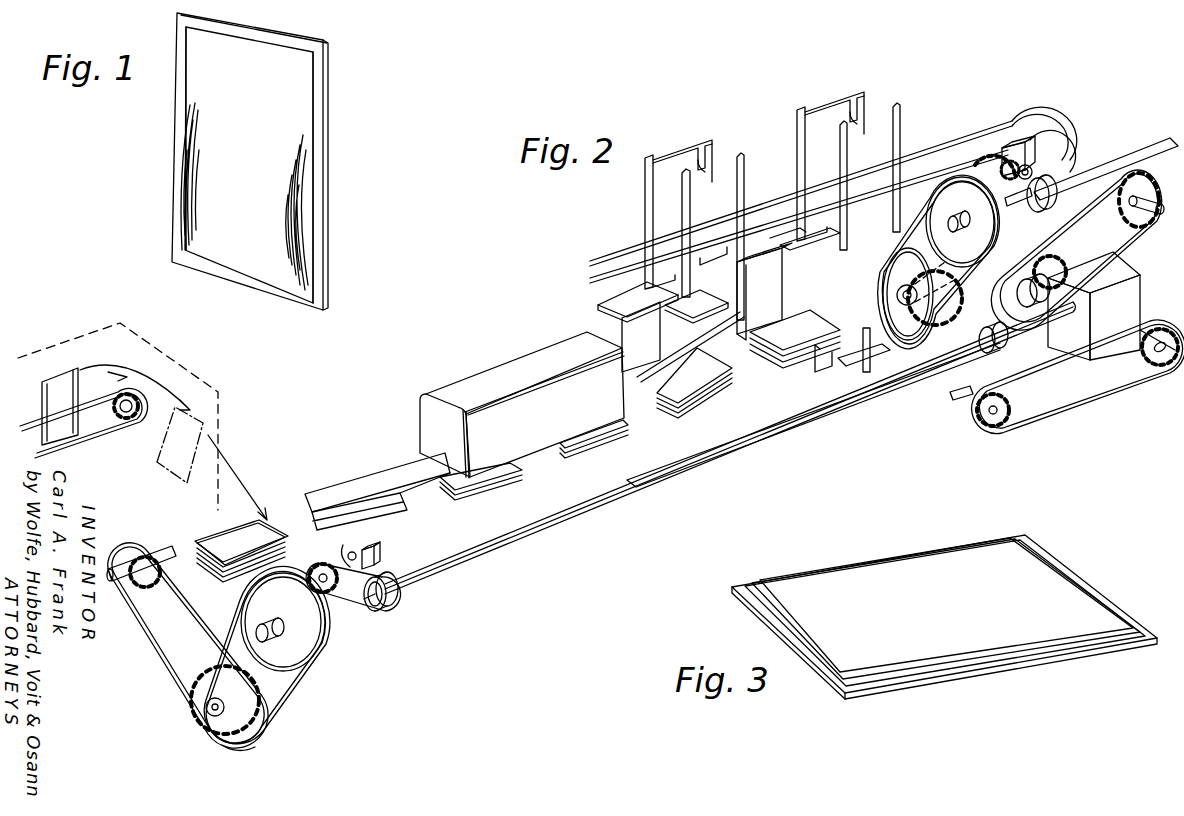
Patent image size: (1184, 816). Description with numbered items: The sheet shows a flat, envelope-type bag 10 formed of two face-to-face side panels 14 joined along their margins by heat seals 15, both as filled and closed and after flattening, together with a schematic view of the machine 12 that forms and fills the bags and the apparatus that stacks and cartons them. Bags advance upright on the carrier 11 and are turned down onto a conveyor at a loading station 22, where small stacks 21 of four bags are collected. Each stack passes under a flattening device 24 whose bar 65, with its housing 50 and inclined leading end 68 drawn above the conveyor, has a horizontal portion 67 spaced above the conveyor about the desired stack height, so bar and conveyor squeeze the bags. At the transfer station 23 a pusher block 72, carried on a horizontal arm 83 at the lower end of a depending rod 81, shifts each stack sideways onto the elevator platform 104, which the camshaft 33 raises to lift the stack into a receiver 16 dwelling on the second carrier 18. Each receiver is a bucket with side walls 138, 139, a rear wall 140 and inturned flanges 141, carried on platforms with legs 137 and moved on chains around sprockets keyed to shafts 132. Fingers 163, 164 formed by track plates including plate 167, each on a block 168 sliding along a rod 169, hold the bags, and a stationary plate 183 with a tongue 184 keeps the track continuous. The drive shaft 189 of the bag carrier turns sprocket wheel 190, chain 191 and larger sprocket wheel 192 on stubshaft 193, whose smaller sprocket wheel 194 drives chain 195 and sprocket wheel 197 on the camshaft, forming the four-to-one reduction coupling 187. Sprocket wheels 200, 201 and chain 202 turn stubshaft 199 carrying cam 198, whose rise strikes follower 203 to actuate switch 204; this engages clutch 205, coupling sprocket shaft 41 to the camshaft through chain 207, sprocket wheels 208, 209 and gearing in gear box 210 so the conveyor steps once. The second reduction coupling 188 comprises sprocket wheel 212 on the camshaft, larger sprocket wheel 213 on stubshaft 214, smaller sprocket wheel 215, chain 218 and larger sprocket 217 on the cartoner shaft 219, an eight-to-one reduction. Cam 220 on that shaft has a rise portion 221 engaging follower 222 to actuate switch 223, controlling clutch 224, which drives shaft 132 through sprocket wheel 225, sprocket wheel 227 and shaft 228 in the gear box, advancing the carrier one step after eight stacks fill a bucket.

In FIG. 1, the bag 10 is at (332, 225).
In FIG. 3, the bag 10 is at (900, 548).
In FIG. 2, the bag 10 is at (80, 371).
In FIG. 2, the carrier 11 is at (104, 438).
In FIG. 2, the machine 12 is at (156, 341).
In FIG. 1, the side panels 14 is at (195, 97).
In FIG. 3, the side panels 14 is at (1070, 594).
In FIG. 1, the heat seals 15 is at (180, 125).
In FIG. 3, the heat seals 15 is at (1020, 653).
In FIG. 2, the receiver 16 is at (756, 191).
In FIG. 2, the second carrier 18 is at (939, 111).
In FIG. 2, the small stacks 21 is at (286, 513).
In FIG. 2, the loading station 22 is at (277, 465).
In FIG. 2, the transfer station 23 is at (800, 402).
In FIG. 2, the flattening device 24 is at (513, 405).
In FIG. 2, the camshaft 33 is at (518, 537).
In FIG. 2, the shaft 41 is at (960, 401).
In FIG. 2, the housing cover 50 is at (456, 386).
In FIG. 2, the bar 65 is at (392, 471).
In FIG. 2, the horizontal portion 67 is at (640, 402).
In FIG. 2, the stack support 68 is at (350, 487).
In FIG. 2, the block 72 is at (808, 372).
In FIG. 2, the depending rod 81 is at (871, 352).
In FIG. 2, the horizontal arm 83 is at (848, 365).
In FIG. 2, the elevator platform 104 is at (642, 337).
In FIG. 2, the shafts 132 is at (1155, 220).
In FIG. 2, the legs 137 is at (962, 160).
In FIG. 2, the side wall 138 is at (650, 213).
In FIG. 2, the side wall 139 is at (722, 170).
In FIG. 2, the rear wall 140 is at (678, 153).
In FIG. 2, the flanges 141 is at (745, 175).
In FIG. 2, the finger 163 is at (712, 262).
In FIG. 2, the finger 164 is at (680, 286).
In FIG. 2, the plate 167 is at (629, 313).
In FIG. 2, the block 168 is at (622, 322).
In FIG. 2, the rod 169 is at (712, 322).
In FIG. 2, the stationary plate 183 is at (812, 224).
In FIG. 2, the tongue 184 is at (806, 241).
In FIG. 2, the reduction coupling 187 is at (289, 736).
In FIG. 2, the second reduction coupling 188 is at (872, 288).
In FIG. 2, the drive shaft 189 is at (170, 550).
In FIG. 2, the sprocket wheel 190 is at (148, 588).
In FIG. 2, the endless chain 191 is at (210, 612).
In FIG. 2, the larger sprocket wheel 192 is at (268, 713).
In FIG. 2, the stubshaft 193 is at (219, 716).
In FIG. 2, the smaller sprocket wheel 194 is at (225, 697).
In FIG. 2, the endless chain 195 is at (288, 690).
In FIG. 2, the sprocket wheel 197 is at (305, 668).
In FIG. 2, the cam 198 is at (340, 540).
In FIG. 2, the stubshaft 199 is at (347, 576).
In FIG. 2, the sprocket wheel 200 is at (309, 574).
In FIG. 2, the sprocket wheel 201 is at (388, 607).
In FIG. 2, the endless chain 202 is at (382, 612).
In FIG. 2, the follower 203 is at (372, 541).
In FIG. 2, the switch 204 is at (381, 553).
In FIG. 2, the clutch 205 is at (1118, 362).
In FIG. 2, the endless chain 207 is at (1065, 405).
In FIG. 2, the sprocket wheel 208 is at (1160, 370).
In FIG. 2, the sprocket wheel 209 is at (1013, 418).
In FIG. 2, the gear box 210 is at (1140, 290).
In FIG. 2, the sprocket wheel 212 is at (993, 352).
In FIG. 2, the larger sprocket wheel 213 is at (895, 296).
In FIG. 2, the stubshaft 214 is at (884, 310).
In FIG. 2, the smaller sprocket wheel 215 is at (934, 301).
In FIG. 2, the larger sprocket 217 is at (935, 238).
In FIG. 2, the endless chain 218 is at (895, 250).
In FIG. 2, the shaft 219 is at (1160, 140).
In FIG. 2, the cam 220 is at (1036, 214).
In FIG. 2, the rise portion 221 is at (1068, 216).
In FIG. 2, the follower 222 is at (1050, 170).
In FIG. 2, the switch 223 is at (1035, 140).
In FIG. 2, the clutch 224 is at (1040, 276).
In FIG. 2, the sprocket wheel 225 is at (1148, 216).
In FIG. 2, the second sprocket wheel 227 is at (1050, 273).
In FIG. 2, the shaft 228 is at (1094, 272).